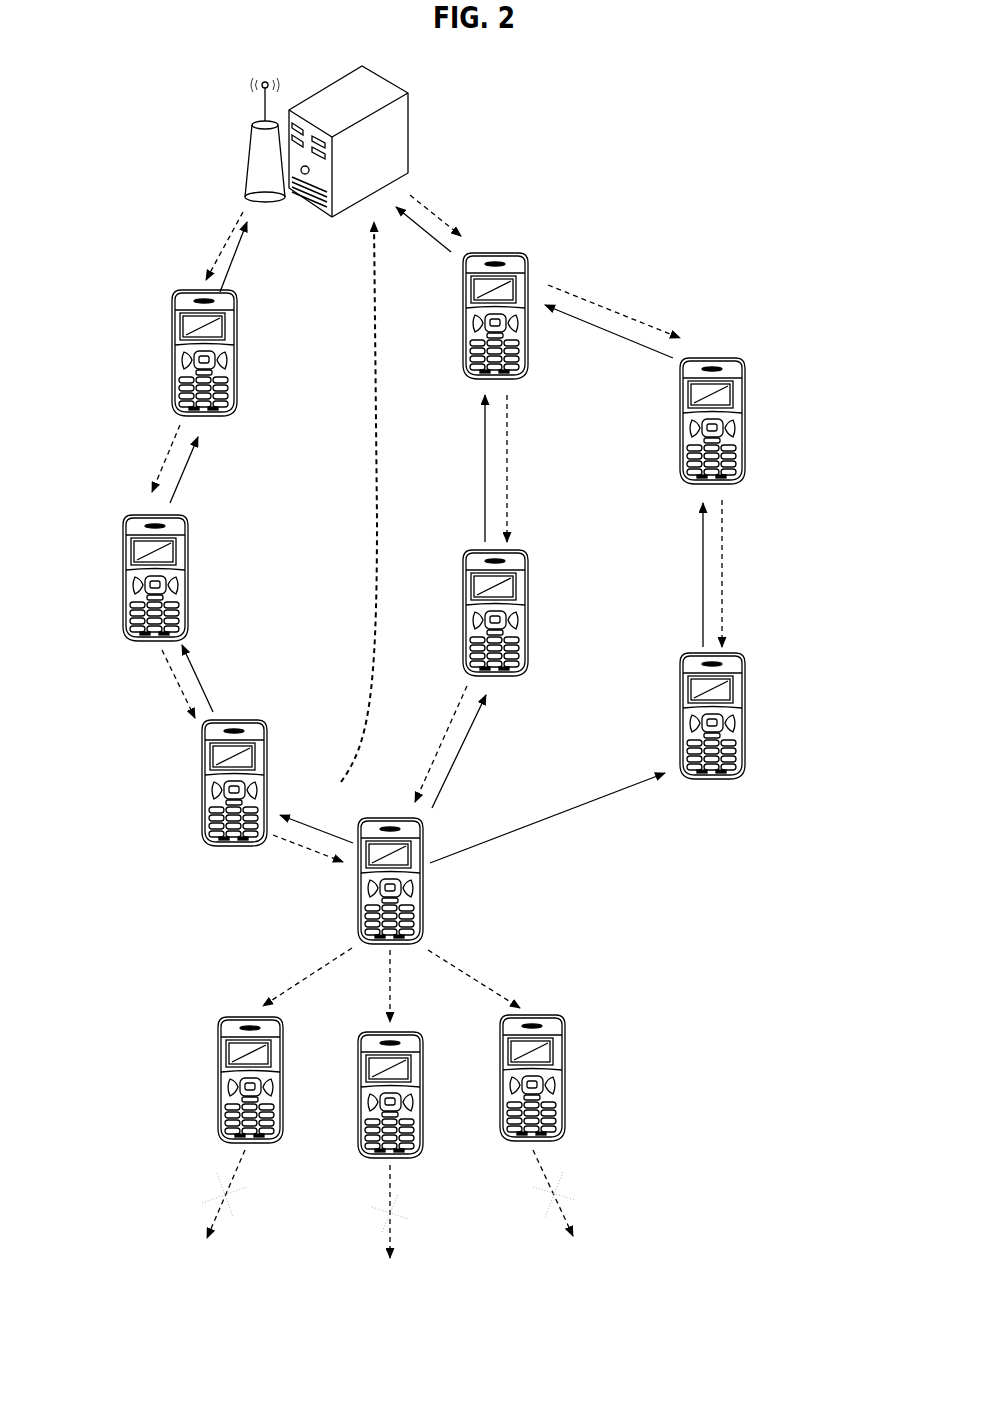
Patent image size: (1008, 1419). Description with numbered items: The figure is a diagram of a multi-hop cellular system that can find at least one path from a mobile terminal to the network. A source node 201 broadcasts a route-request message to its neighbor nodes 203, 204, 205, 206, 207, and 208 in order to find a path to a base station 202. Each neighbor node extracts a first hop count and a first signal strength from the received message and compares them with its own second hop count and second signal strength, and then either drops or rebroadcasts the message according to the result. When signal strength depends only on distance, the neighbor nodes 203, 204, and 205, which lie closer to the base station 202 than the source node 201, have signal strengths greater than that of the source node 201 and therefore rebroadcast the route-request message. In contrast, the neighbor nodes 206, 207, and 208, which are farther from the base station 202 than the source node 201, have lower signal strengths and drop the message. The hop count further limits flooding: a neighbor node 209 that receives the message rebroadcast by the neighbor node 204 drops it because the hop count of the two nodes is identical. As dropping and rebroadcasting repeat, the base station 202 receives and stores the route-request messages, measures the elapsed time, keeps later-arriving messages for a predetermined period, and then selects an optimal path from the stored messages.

The source node 201 is at (423, 877).
The base station 202 is at (408, 128).
The neighbor node 203 is at (203, 773).
The neighbor node 204 is at (528, 605).
The neighbor node 205 is at (745, 710).
The neighbor node 206 is at (218, 1075).
The neighbor node 207 is at (422, 1093).
The neighbor node 208 is at (563, 1075).
The neighbor node 209 is at (188, 573).